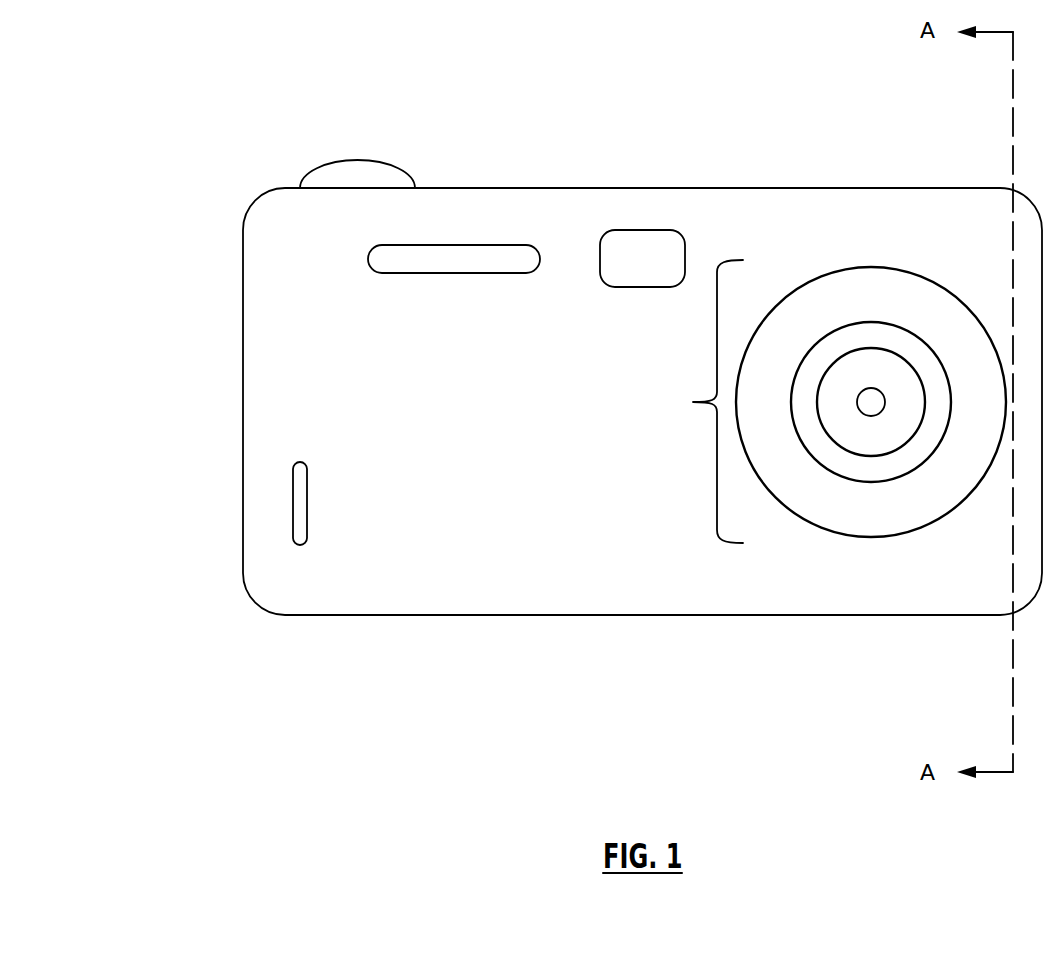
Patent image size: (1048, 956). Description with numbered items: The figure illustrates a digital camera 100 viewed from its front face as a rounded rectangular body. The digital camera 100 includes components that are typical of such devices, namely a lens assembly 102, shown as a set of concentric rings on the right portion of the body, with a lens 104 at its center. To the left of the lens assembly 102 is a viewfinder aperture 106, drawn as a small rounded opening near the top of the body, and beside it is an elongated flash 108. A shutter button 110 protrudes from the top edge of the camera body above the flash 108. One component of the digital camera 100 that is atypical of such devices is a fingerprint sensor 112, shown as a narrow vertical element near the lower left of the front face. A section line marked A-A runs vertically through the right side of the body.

The digital camera 100 is at (178, 152).
The lens assembly 102 is at (693, 402).
The lens 104 is at (861, 391).
The viewfinder aperture 106 is at (643, 230).
The flash 108 is at (458, 247).
The shutter button 110 is at (353, 160).
The fingerprint sensor 112 is at (293, 506).